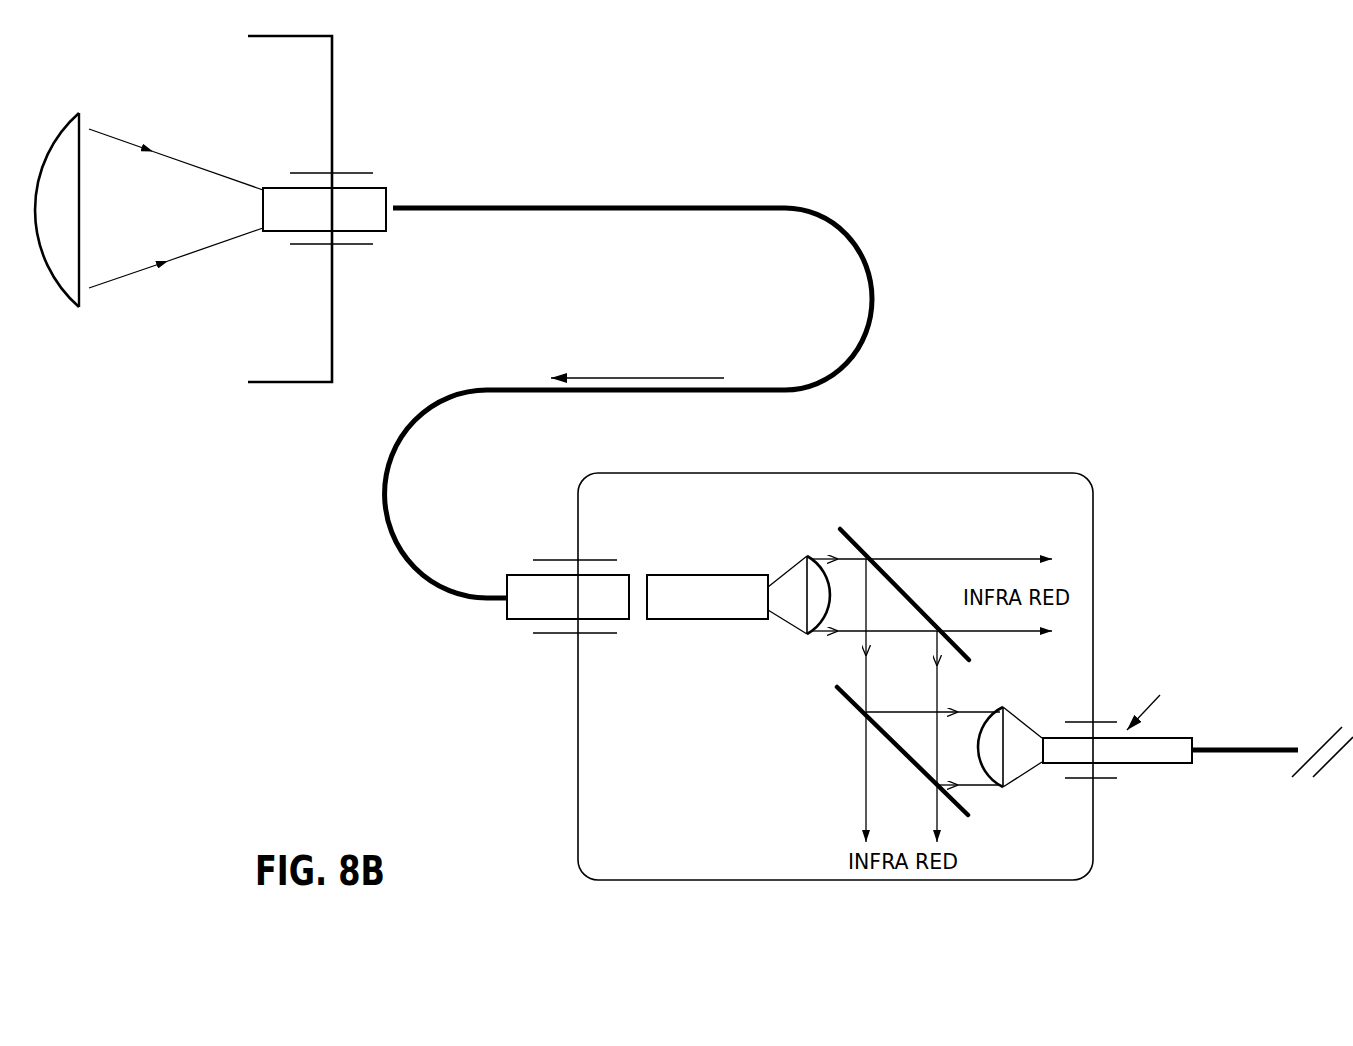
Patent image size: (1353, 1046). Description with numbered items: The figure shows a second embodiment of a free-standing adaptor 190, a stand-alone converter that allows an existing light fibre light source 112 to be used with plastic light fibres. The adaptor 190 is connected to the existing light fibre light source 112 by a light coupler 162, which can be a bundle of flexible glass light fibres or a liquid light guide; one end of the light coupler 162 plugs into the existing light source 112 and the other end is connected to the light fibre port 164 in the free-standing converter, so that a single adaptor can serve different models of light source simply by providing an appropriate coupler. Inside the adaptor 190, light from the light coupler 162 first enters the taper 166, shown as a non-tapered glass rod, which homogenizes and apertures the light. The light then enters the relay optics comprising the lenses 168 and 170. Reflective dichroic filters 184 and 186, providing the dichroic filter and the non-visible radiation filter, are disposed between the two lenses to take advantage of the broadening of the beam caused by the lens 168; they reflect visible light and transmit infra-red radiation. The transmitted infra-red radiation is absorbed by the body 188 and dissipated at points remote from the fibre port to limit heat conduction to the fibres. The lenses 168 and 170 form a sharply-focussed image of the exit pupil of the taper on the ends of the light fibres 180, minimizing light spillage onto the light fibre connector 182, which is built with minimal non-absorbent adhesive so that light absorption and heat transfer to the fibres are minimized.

The existing light fibre light source 112 is at (190, 325).
The light fibre port 164 is at (577, 210).
The light coupler 162 is at (557, 634).
The taper 166 is at (707, 620).
The lens 168 is at (805, 637).
The reflective dichroic filter 184 is at (848, 533).
The reflective dichroic filter 186 is at (848, 707).
The body 188 is at (1093, 530).
The lens 170 is at (1005, 788).
The light fibre connector 182 is at (1182, 737).
The light fibres 180 is at (1245, 755).
The free-standing adaptor 190 is at (565, 820).